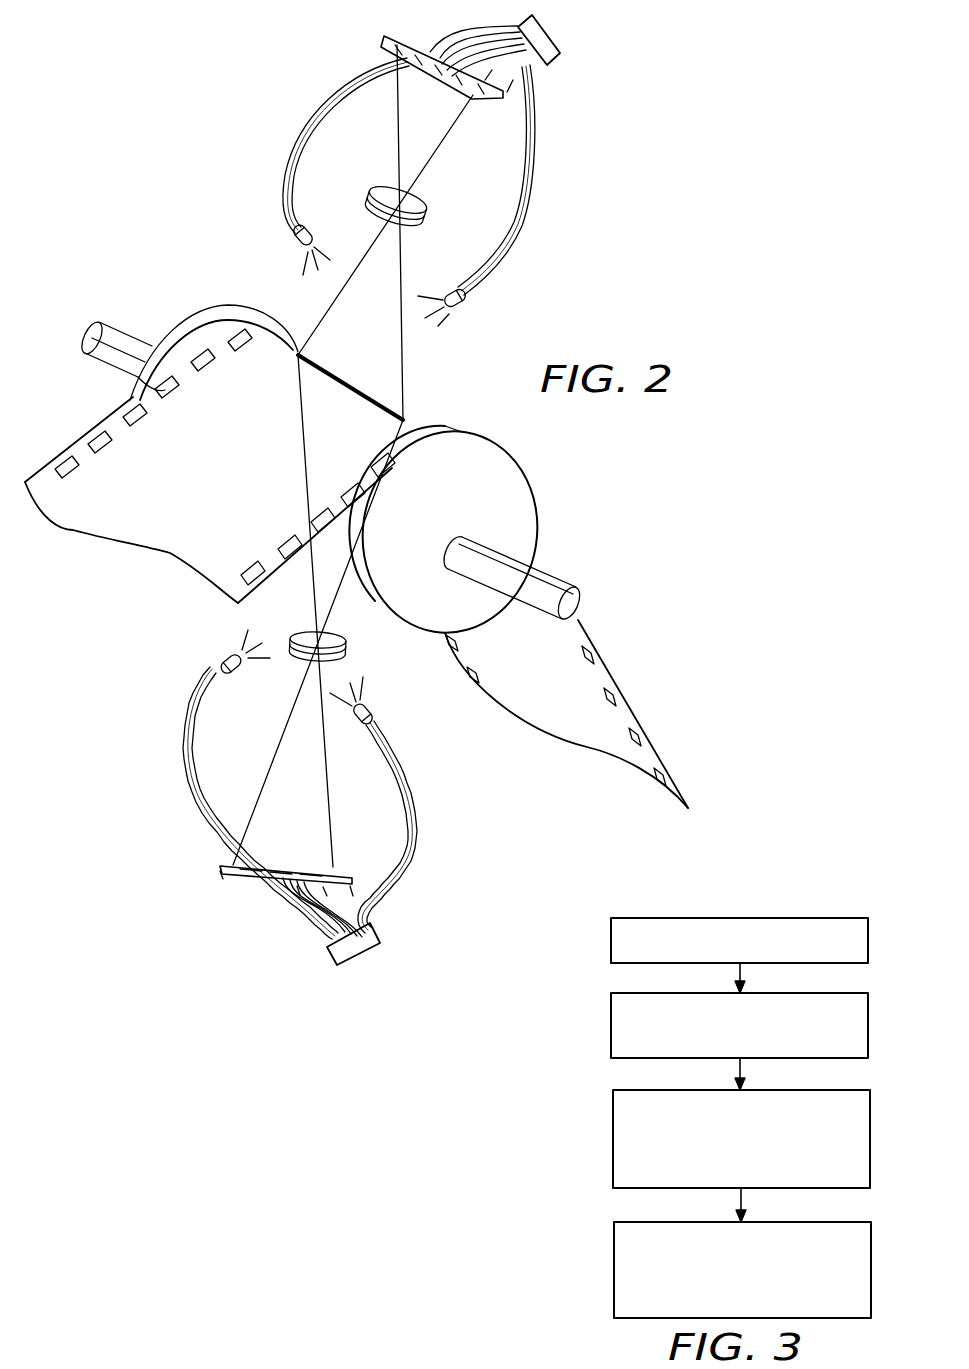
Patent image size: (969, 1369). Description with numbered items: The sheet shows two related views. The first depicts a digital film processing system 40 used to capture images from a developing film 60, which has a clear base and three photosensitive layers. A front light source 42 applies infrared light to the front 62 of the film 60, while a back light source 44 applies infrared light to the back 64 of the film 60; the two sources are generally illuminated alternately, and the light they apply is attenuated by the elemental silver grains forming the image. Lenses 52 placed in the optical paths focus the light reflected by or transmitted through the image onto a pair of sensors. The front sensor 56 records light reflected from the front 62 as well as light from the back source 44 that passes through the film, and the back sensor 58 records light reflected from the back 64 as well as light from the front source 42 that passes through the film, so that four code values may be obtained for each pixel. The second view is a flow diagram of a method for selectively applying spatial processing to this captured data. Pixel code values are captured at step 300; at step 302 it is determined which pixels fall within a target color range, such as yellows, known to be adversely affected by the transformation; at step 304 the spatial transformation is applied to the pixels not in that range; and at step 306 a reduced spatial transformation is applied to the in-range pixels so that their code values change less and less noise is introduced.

In FIG. 2, the digital film processing system 40 is at (147, 154).
In FIG. 2, the front light source 42 is at (294, 233).
In FIG. 2, the back light source 44 is at (226, 658).
In FIG. 2, the lenses 52 is at (390, 188).
In FIG. 2, the front sensor 56 is at (484, 100).
In FIG. 2, the back sensor 58 is at (230, 878).
In FIG. 2, the film 60 is at (73, 534).
In FIG. 2, the front of the film 62 is at (236, 478).
In FIG. 2, the back of the film 64 is at (168, 562).
In FIG. 3, the capture image data step 300 is at (610, 944).
In FIG. 3, the determine if pixel in target color range step 302 is at (610, 1026).
In FIG. 3, the apply spatial transformation on pixels not in range step 304 is at (612, 1141).
In FIG. 3, the apply reduced spatial transformation on pixels in range step 306 is at (613, 1271).